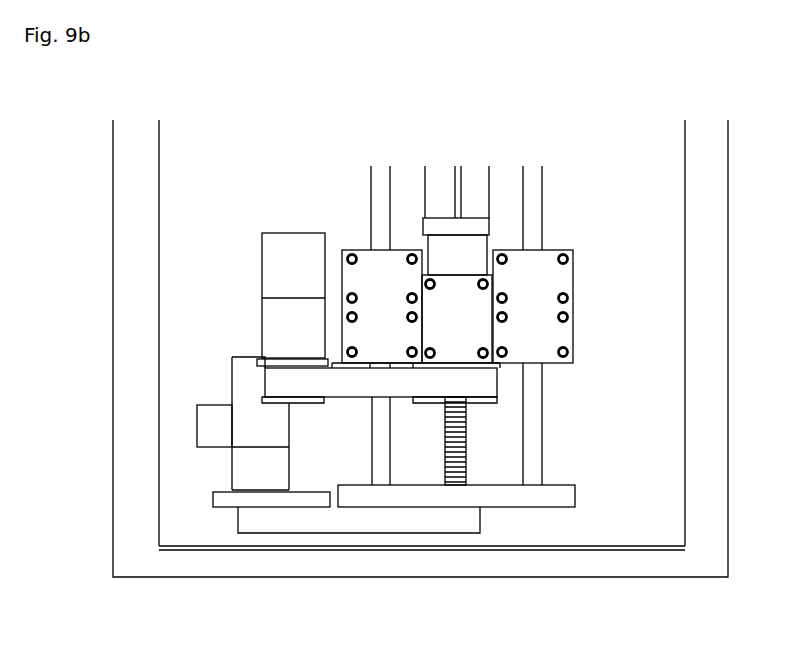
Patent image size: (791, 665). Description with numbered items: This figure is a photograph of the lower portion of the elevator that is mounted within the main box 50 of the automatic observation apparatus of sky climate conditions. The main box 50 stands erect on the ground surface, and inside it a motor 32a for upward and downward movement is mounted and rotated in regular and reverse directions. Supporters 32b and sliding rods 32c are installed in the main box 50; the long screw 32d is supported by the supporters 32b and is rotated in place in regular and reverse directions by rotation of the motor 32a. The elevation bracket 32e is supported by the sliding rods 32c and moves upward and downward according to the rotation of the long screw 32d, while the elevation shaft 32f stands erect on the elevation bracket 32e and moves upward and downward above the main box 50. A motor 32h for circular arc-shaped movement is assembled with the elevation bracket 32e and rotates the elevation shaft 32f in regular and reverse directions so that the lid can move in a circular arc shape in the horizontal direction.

The main box 50 is at (141, 183).
The motor for upward and downward movement 32a is at (245, 412).
The supporters 32b is at (542, 501).
The sliding rods 32c is at (528, 183).
The long screw 32d is at (466, 448).
The elevation bracket 32e is at (542, 283).
The elevation shaft 32f is at (463, 252).
The motor for circular arc-shaped movement 32h is at (287, 248).